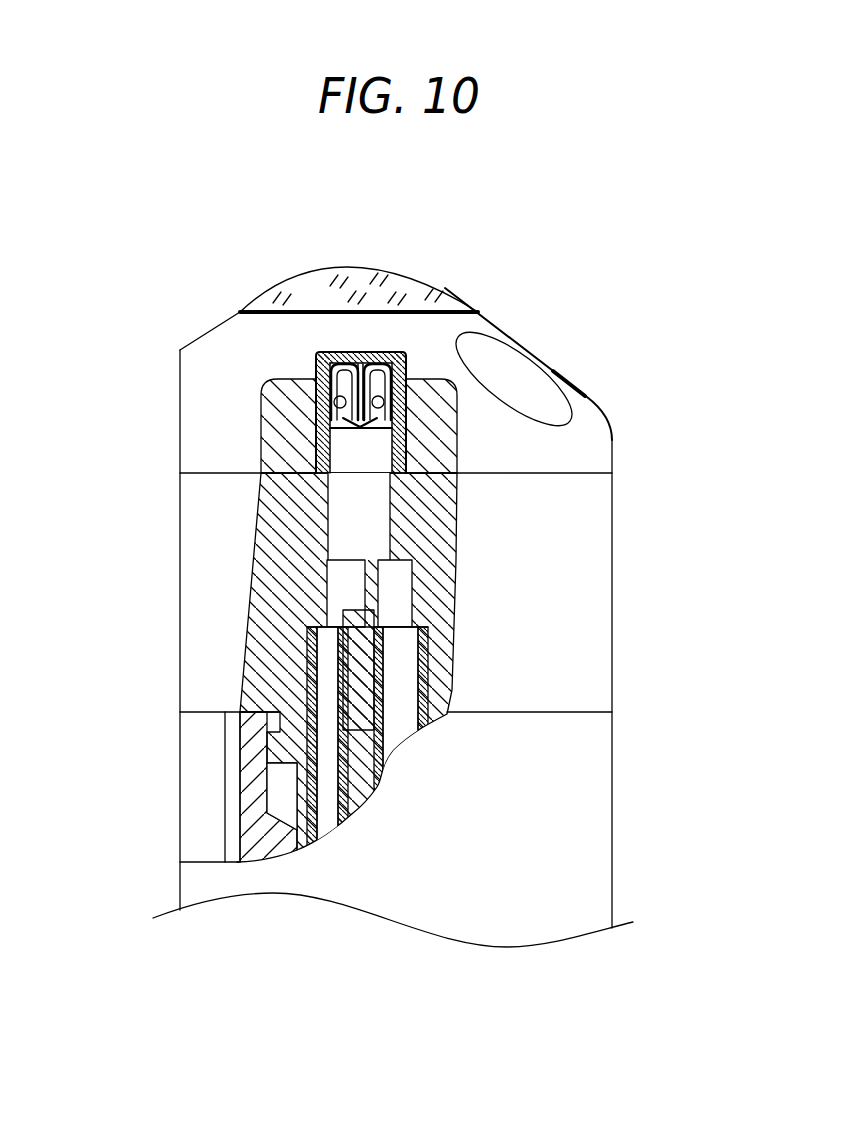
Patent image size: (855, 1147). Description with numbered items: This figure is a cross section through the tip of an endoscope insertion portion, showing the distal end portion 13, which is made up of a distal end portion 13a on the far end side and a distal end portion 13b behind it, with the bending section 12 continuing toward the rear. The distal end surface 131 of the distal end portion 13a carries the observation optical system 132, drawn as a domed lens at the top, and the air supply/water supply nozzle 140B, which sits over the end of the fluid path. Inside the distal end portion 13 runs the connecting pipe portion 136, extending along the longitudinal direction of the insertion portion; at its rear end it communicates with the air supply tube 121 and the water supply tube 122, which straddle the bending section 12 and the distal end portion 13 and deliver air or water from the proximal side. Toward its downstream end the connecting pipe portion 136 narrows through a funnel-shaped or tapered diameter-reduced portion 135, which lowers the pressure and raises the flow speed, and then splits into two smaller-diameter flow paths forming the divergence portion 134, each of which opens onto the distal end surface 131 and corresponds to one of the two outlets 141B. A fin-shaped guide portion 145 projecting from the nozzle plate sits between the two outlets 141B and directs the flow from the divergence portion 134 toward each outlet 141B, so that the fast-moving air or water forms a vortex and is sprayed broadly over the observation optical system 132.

The bending section 12 is at (160, 728).
The distal end portion 13 is at (712, 427).
The distal end portion 13a is at (603, 450).
The distal end portion 13b is at (603, 508).
The air supply tube 121 is at (305, 793).
The water supply tube 122 is at (343, 673).
The distal end surface 131 is at (480, 322).
The observation optical system 132 is at (445, 292).
The divergence portion 134 is at (320, 406).
The diameter-reduced portion 135 is at (318, 424).
The connecting pipe portion 136 is at (330, 459).
The air supply/water supply nozzle 140B is at (318, 342).
The outlet 141B is at (340, 357).
The guide portion 145 is at (360, 360).